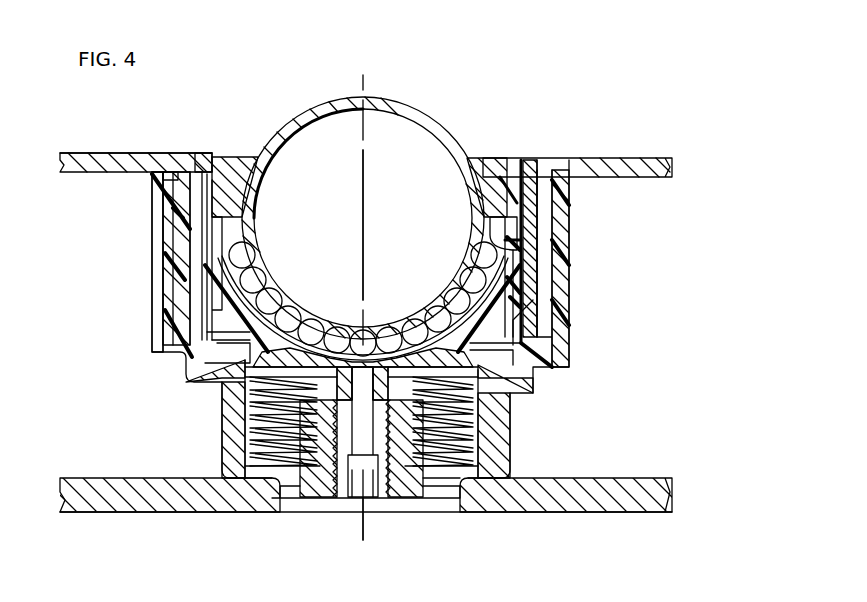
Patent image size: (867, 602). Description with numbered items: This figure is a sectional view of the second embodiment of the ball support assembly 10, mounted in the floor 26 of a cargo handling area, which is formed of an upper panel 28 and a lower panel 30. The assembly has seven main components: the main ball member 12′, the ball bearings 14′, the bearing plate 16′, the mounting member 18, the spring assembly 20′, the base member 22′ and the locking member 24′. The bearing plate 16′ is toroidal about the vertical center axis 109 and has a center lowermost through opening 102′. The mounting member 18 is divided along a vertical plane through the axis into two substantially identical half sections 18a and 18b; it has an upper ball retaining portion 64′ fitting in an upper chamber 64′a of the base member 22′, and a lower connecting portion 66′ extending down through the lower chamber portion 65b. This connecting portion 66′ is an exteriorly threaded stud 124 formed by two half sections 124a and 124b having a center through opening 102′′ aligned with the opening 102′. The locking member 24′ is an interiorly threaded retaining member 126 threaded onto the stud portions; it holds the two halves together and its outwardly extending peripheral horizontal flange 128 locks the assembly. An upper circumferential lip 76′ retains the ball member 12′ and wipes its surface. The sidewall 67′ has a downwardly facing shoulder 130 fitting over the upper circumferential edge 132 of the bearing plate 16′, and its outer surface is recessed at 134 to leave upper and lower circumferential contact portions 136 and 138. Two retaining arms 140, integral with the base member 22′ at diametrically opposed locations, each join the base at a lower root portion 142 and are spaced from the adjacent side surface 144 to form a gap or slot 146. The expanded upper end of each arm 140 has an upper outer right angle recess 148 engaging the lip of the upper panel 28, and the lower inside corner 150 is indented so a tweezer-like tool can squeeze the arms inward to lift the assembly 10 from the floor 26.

The ball support assembly 10 is at (380, 86).
The main ball member 12′ is at (395, 100).
The ball bearings 14′ is at (270, 266).
The bearing plate 16′ is at (540, 290).
The mounting member 18 is at (520, 352).
The mounting member half section 18a is at (515, 330).
The mounting member half section 18b is at (207, 332).
The spring assembly 20′ is at (480, 424).
The base member 22′ is at (569, 248).
The locking member 24′ is at (305, 505).
The floor 26 is at (84, 152).
The upper panel 28 is at (92, 153).
The lower panel 30 is at (100, 478).
The upper ball retaining portion 64′ is at (212, 276).
The upper chamber 64′a is at (218, 292).
The lower chamber portion 65b is at (240, 450).
The lower connecting portion 66′ is at (350, 503).
The sidewall 67′ is at (512, 270).
The upper circumferential lip 76′ is at (487, 158).
The center lowermost through opening 102′ is at (373, 395).
The center through opening 102′′ is at (366, 400).
The vertical center axis 109 is at (366, 193).
The exteriorly threaded stud 124 is at (405, 500).
The stud half section 124a is at (393, 500).
The stud half section 124b is at (325, 500).
The retaining member 126 is at (298, 503).
The peripheral horizontal flange 128 is at (445, 503).
The downwardly facing shoulder 130 is at (505, 236).
The upper circumferential edge 132 is at (515, 205).
The recess 134 is at (207, 245).
The upper circumferential contact portion 136 is at (203, 160).
The lower circumferential contact portion 138 is at (207, 352).
The retaining arm 140 is at (207, 262).
The lower root portion 142 is at (207, 310).
The side surface 144 is at (207, 225).
The gap or slot 146 is at (207, 205).
The upper outer right angle recess 148 is at (165, 170).
The lower inside corner 150 is at (158, 164).